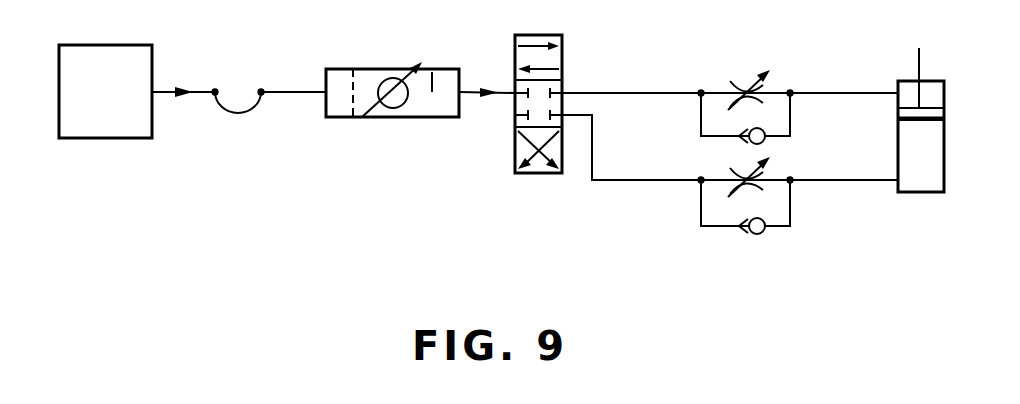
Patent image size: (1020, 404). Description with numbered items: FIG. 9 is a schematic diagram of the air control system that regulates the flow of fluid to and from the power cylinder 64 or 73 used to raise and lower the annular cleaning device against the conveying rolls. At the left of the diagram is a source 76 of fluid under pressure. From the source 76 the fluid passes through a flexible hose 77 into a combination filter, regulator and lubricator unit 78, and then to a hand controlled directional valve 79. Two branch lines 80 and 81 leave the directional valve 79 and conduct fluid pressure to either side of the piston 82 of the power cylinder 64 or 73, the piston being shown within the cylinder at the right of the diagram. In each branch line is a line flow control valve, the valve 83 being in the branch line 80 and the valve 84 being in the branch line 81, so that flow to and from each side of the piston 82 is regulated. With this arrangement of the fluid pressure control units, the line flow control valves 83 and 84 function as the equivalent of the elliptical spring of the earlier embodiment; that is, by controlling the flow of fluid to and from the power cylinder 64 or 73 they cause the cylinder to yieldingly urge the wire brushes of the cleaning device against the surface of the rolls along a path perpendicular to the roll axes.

The source of fluid under pressure 76 is at (80, 128).
The flexible hose 77 is at (223, 113).
The combination filter, regulator and lubricator unit 78 is at (418, 117).
The hand controlled directional valve 79 is at (533, 173).
The branch line 80 is at (617, 92).
The branch line 81 is at (623, 181).
The piston 82 is at (898, 113).
The line flow control valve 83 is at (778, 98).
The line flow control valve 84 is at (713, 227).
The power cylinder 64 is at (894, 158).
The double-acting power cylinder 73 is at (917, 188).